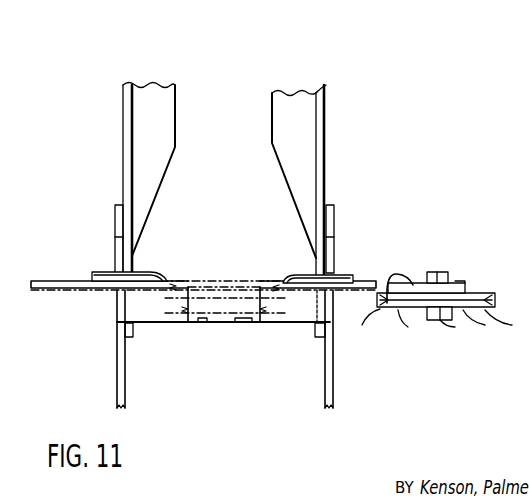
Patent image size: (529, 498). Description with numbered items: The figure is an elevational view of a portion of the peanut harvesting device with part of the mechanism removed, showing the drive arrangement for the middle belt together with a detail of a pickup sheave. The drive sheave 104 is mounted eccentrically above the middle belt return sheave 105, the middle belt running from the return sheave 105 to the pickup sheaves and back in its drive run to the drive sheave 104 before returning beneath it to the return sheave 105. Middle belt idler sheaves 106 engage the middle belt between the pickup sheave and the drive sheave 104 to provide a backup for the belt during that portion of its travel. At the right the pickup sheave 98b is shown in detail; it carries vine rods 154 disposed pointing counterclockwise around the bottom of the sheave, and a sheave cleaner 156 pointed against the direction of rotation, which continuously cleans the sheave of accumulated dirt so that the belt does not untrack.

The drive sheave 104 is at (203, 292).
The middle belt return sheave 105 is at (194, 312).
The middle belt idler sheave 106 is at (88, 291).
The pickup sheave 98b is at (480, 297).
The vine rod 154 is at (470, 317).
The sheave cleaner 156 is at (402, 298).